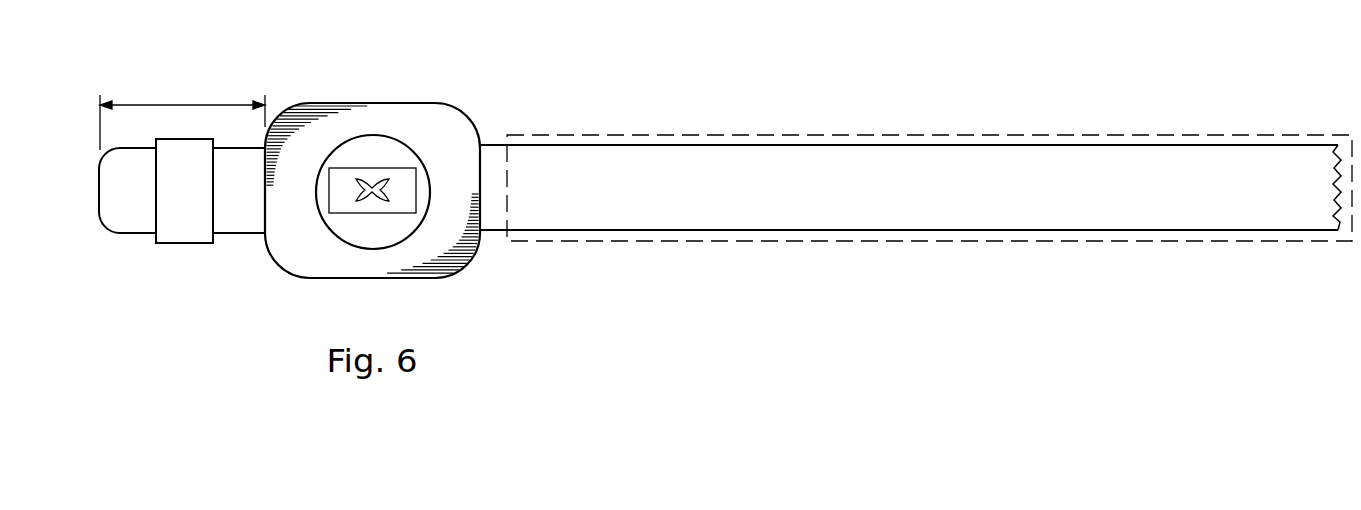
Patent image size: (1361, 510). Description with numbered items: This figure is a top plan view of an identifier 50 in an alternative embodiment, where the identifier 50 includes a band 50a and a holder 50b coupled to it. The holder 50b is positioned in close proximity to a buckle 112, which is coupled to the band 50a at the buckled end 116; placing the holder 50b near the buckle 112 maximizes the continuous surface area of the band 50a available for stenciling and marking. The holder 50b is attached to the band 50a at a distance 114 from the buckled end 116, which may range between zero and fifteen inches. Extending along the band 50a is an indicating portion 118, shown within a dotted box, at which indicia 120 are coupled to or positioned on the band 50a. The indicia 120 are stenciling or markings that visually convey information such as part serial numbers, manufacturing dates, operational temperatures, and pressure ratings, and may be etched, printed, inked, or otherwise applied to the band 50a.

The identifier 50 is at (380, 103).
The band 50a is at (493, 157).
The holder 50b is at (322, 268).
The buckle 112 is at (183, 235).
The distance 114 is at (183, 103).
The buckled end 116 is at (95, 207).
The indicating portion 118 is at (942, 133).
The indicia 120 is at (662, 177).